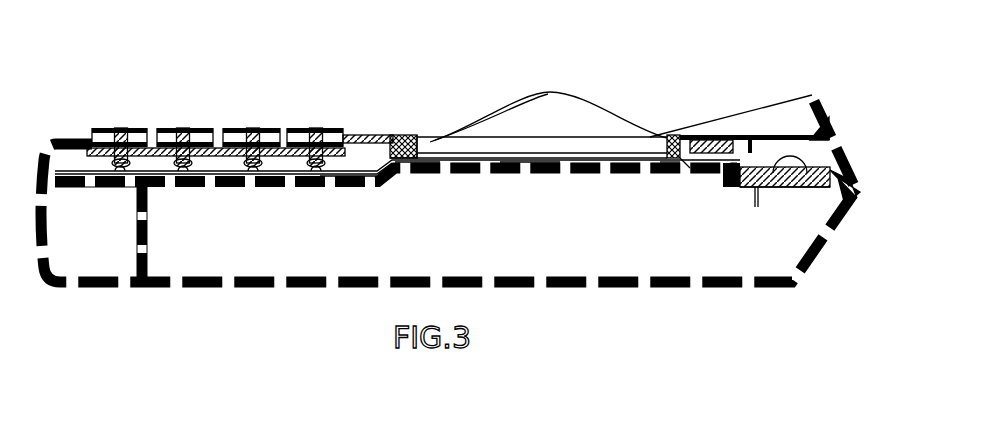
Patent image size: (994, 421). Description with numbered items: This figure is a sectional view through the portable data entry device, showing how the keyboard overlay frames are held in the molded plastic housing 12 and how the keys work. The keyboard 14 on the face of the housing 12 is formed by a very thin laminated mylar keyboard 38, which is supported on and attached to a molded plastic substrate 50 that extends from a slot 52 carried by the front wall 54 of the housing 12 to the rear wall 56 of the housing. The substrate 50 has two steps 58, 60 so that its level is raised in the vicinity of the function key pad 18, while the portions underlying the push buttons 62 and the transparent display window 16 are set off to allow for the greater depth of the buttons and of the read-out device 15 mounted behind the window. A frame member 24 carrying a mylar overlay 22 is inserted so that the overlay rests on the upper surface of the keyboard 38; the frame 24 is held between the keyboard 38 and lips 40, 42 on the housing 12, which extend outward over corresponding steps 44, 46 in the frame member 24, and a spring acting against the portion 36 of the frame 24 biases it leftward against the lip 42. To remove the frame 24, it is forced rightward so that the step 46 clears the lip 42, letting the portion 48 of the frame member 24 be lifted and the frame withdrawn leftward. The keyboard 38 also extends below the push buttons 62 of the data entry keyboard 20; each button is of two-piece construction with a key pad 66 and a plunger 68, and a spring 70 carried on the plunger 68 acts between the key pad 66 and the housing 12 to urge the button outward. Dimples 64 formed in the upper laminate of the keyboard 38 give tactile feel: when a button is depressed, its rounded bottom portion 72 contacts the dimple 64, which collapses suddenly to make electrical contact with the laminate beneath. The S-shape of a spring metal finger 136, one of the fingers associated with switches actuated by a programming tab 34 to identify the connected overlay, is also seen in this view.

The molded plastic housing 12 is at (850, 200).
The keyboard 14 is at (384, 85).
The read-out device 15 is at (843, 70).
The transparent display window 16 is at (777, 140).
The function key pad 18 is at (503, 98).
The data entry keyboard 20 is at (193, 95).
The mylar overlay 22 is at (540, 157).
The frame member 24 is at (550, 93).
The programming tab 34 is at (692, 172).
The portion of the frame 36 is at (677, 136).
The keyboard 38 is at (530, 176).
The lip 40 is at (710, 140).
The lip 42 is at (397, 136).
The step 44 is at (678, 172).
The step 46 is at (415, 176).
The portion of frame member 48 is at (424, 146).
The molded plastic substrate 50 is at (283, 183).
The slot 52 is at (824, 190).
The front wall 54 is at (850, 205).
The rear wall 56 is at (53, 220).
The step 58 is at (388, 186).
The step 60 is at (727, 185).
The push buttons 62 is at (120, 128).
The dimples 64 is at (240, 175).
The key pad 66 is at (330, 128).
The plunger 68 is at (333, 186).
The spring 70 is at (303, 128).
The rounded bottom portion 72 is at (188, 167).
The spring metal finger 136 is at (745, 195).